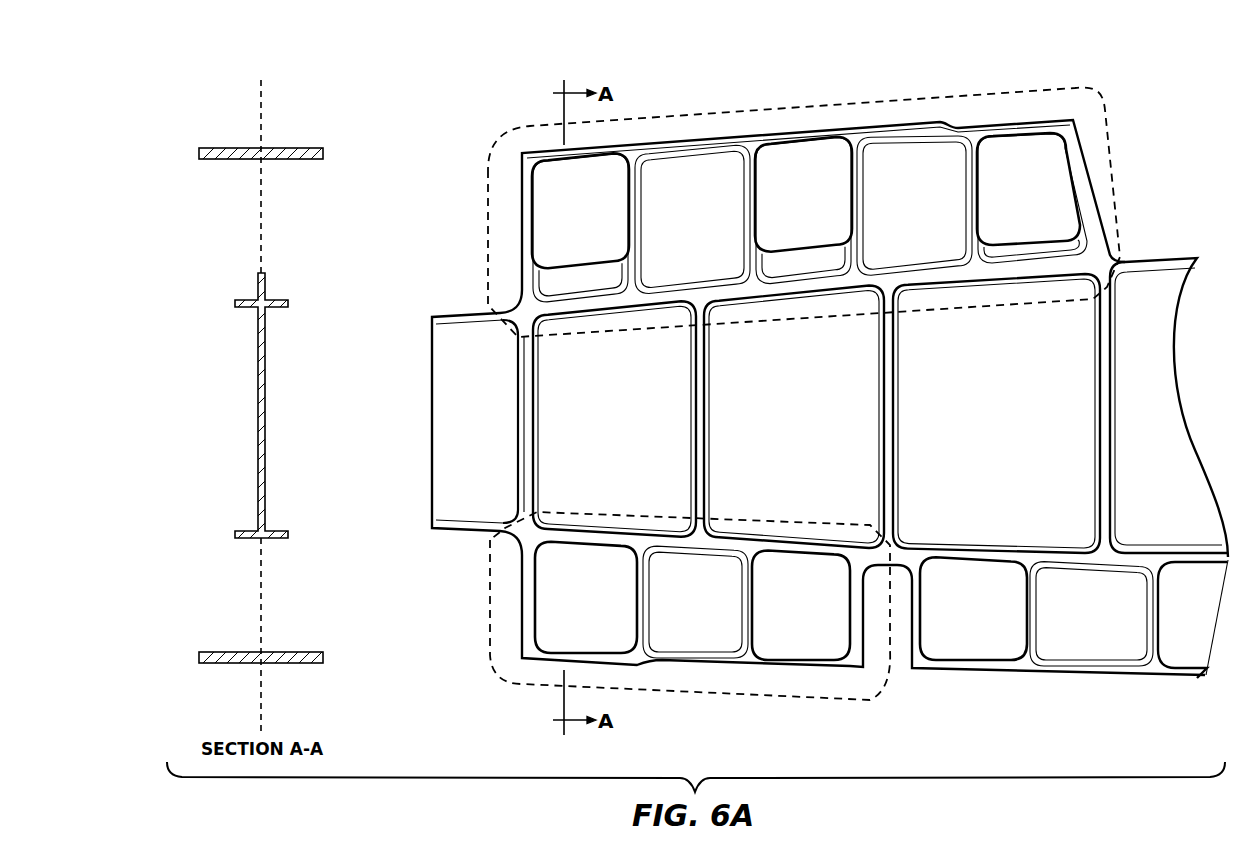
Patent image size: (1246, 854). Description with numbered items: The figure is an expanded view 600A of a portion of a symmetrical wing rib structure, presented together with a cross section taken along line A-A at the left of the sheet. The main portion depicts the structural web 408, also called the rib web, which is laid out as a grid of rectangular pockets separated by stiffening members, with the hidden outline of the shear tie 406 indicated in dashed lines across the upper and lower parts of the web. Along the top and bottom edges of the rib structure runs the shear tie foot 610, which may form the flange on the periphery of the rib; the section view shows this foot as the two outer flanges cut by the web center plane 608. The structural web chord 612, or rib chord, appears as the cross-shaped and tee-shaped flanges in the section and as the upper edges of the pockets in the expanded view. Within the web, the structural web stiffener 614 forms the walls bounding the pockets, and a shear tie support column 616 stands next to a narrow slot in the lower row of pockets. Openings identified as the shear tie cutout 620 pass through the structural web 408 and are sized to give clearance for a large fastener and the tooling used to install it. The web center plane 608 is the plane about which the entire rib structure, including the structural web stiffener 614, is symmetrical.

The shear tie 406 is at (483, 170).
The structural web 408 is at (257, 408).
The expanded view 600A is at (870, 54).
The web center plane 608 is at (259, 226).
The shear tie foot 610 is at (220, 147).
The structural web chord 612 is at (228, 307).
The structural web stiffener 614 is at (712, 403).
The shear tie support column 616 is at (872, 651).
The shear tie cutout 620 is at (583, 600).